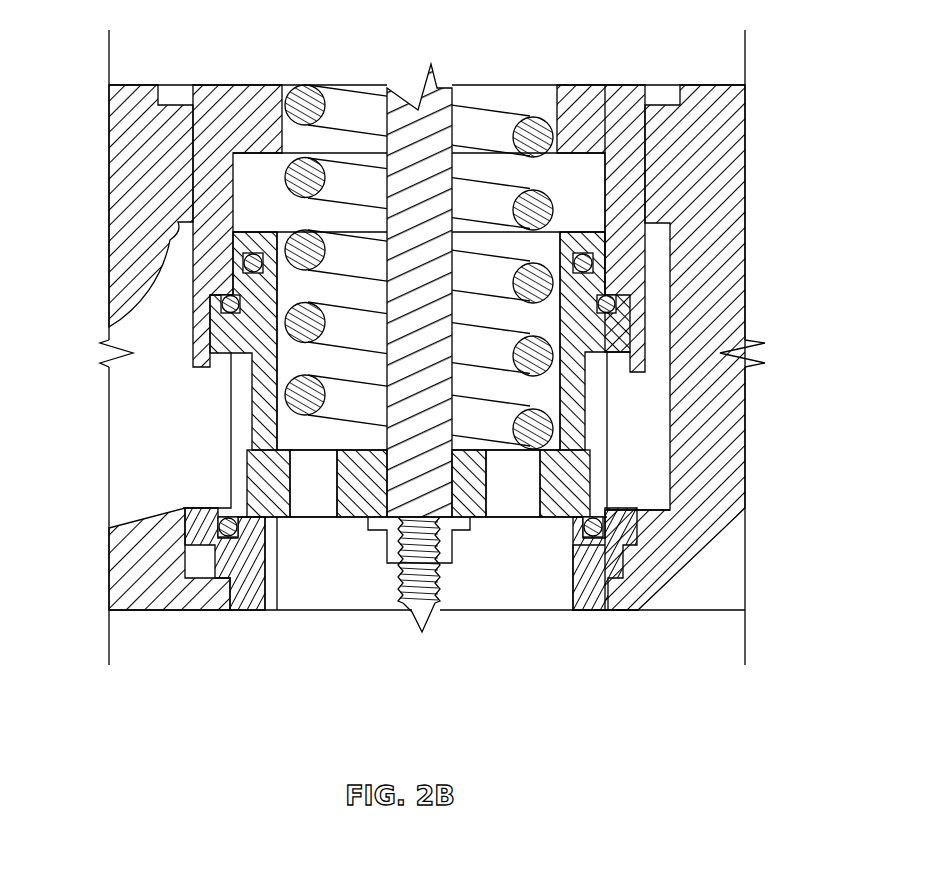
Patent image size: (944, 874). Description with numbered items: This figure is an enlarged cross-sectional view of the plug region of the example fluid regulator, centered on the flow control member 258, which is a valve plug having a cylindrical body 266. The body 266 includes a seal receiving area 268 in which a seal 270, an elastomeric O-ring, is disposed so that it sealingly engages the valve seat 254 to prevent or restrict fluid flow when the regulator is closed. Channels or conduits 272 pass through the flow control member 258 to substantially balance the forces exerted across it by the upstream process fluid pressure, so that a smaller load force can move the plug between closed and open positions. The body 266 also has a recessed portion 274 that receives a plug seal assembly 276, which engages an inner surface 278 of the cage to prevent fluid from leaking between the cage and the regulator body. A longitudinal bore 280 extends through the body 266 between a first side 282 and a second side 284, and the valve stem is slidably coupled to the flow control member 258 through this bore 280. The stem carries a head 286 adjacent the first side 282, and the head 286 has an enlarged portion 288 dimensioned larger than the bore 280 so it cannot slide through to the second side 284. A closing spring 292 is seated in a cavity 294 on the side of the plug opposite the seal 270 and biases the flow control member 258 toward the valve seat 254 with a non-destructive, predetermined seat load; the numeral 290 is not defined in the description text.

The valve seat 254 is at (604, 594).
The flow control member 258 is at (575, 365).
The cylindrical body 266 is at (253, 410).
The seal receiving area 268 is at (568, 527).
The seal 270 is at (605, 515).
The channels 272 is at (300, 473).
The recessed portion 274 is at (246, 263).
The plug seal assembly 276 is at (592, 263).
The inner surface 278 is at (585, 195).
The longitudinal bore 280 is at (452, 492).
The first side 282 is at (277, 612).
The second side 284 is at (253, 442).
The head 286 is at (385, 545).
The enlarged portion 288 is at (353, 520).
The spring 290 is at (293, 233).
The closing spring 292 is at (302, 97).
The cavity 294 is at (548, 400).